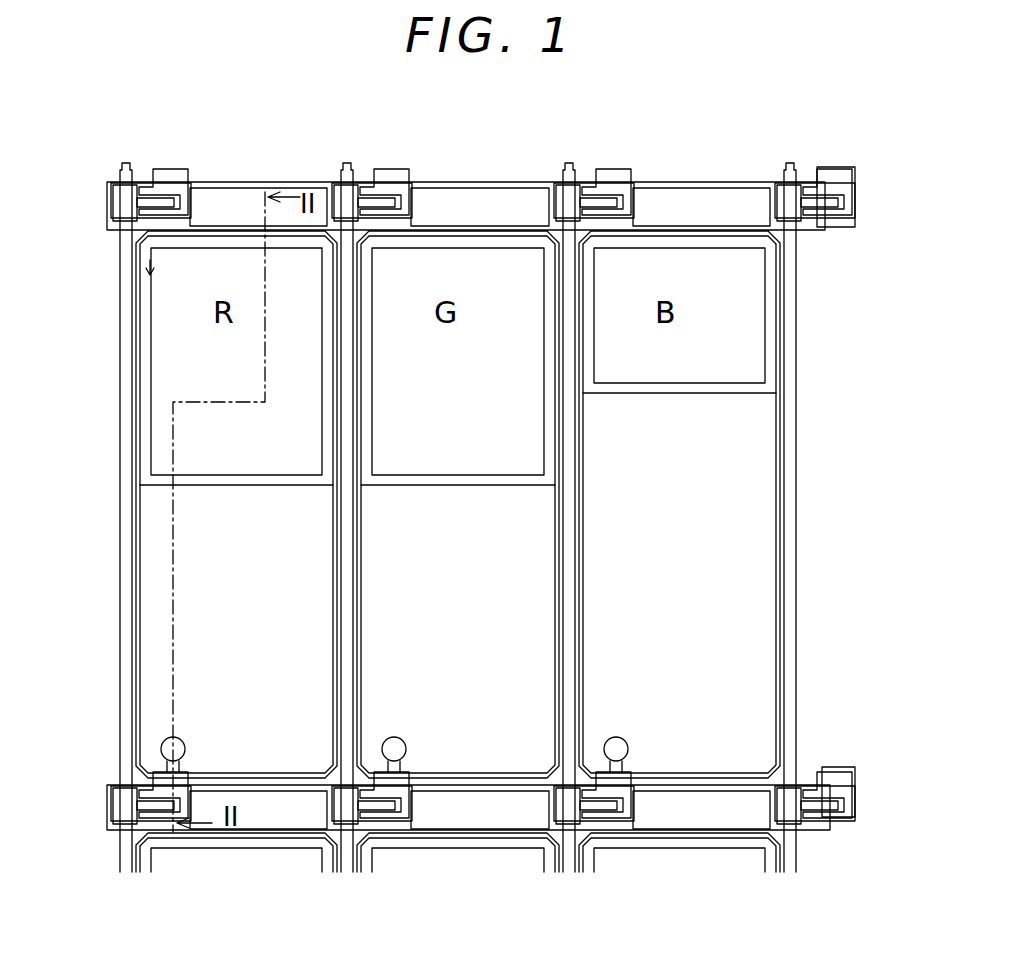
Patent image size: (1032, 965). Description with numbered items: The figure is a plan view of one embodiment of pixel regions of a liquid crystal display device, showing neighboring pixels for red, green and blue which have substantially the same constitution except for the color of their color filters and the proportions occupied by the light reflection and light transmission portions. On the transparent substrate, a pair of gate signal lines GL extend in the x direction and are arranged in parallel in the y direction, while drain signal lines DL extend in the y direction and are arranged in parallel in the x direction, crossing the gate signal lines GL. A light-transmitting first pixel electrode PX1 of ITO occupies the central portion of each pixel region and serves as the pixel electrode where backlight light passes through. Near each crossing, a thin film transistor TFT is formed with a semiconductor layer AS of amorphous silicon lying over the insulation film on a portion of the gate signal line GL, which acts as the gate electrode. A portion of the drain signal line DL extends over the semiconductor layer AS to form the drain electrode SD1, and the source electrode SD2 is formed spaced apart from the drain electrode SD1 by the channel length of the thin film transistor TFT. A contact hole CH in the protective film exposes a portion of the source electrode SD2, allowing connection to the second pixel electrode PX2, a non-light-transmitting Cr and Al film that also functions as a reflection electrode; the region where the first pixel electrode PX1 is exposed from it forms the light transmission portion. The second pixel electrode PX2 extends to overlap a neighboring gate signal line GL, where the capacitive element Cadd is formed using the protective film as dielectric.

The gate signal line GL is at (827, 190).
The drain signal line DL is at (345, 186).
The first pixel electrode PX1 is at (228, 232).
The second pixel electrode PX2 is at (748, 185).
The capacitive element Cadd is at (700, 202).
The source electrode SD2 is at (740, 392).
The drain electrode SD1 is at (605, 805).
The semiconductor layer AS is at (415, 810).
The contact hole CH is at (613, 737).
The thin film transistor TFT is at (658, 812).